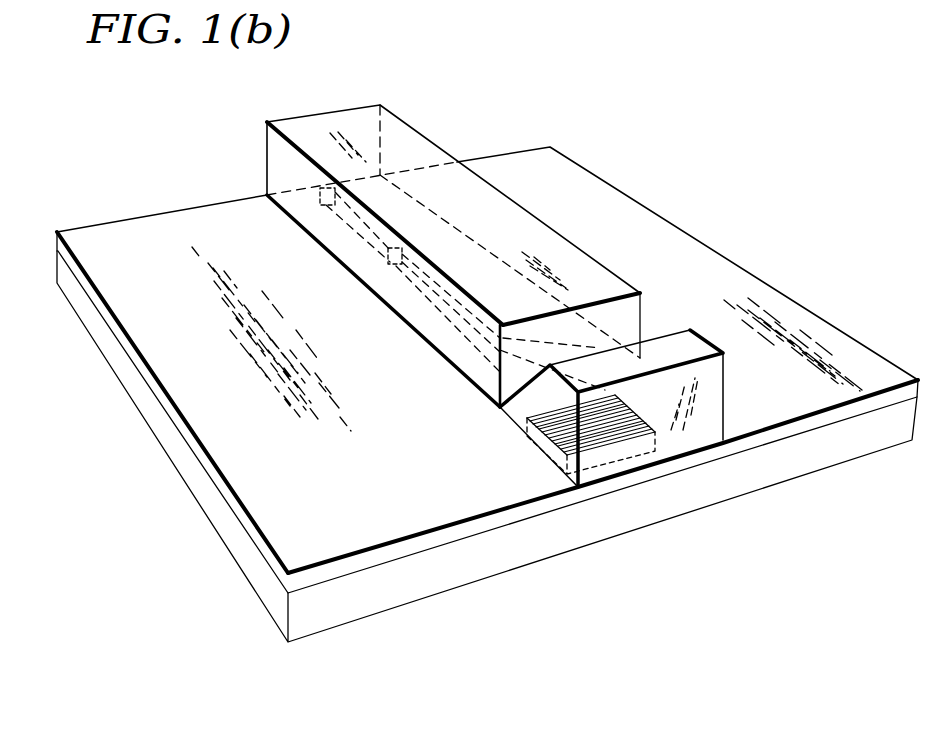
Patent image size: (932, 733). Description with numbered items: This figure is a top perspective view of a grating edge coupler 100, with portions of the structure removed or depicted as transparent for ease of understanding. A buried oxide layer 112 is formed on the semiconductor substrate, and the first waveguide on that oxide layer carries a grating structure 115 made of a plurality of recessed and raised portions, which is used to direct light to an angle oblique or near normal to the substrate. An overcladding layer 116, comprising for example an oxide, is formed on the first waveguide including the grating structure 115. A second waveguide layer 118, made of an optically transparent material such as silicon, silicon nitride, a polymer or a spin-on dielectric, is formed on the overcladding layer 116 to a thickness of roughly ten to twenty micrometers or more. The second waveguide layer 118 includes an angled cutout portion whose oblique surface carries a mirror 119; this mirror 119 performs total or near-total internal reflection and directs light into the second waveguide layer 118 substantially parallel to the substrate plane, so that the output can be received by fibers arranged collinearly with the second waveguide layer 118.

The grating edge coupler 100 is at (703, 103).
The buried oxide (BOX) layer 112 is at (515, 555).
The grating structure 115 is at (615, 437).
The overcladding layer 116 is at (390, 555).
The second waveguide layer 118 is at (408, 152).
The mirror 119 is at (647, 350).